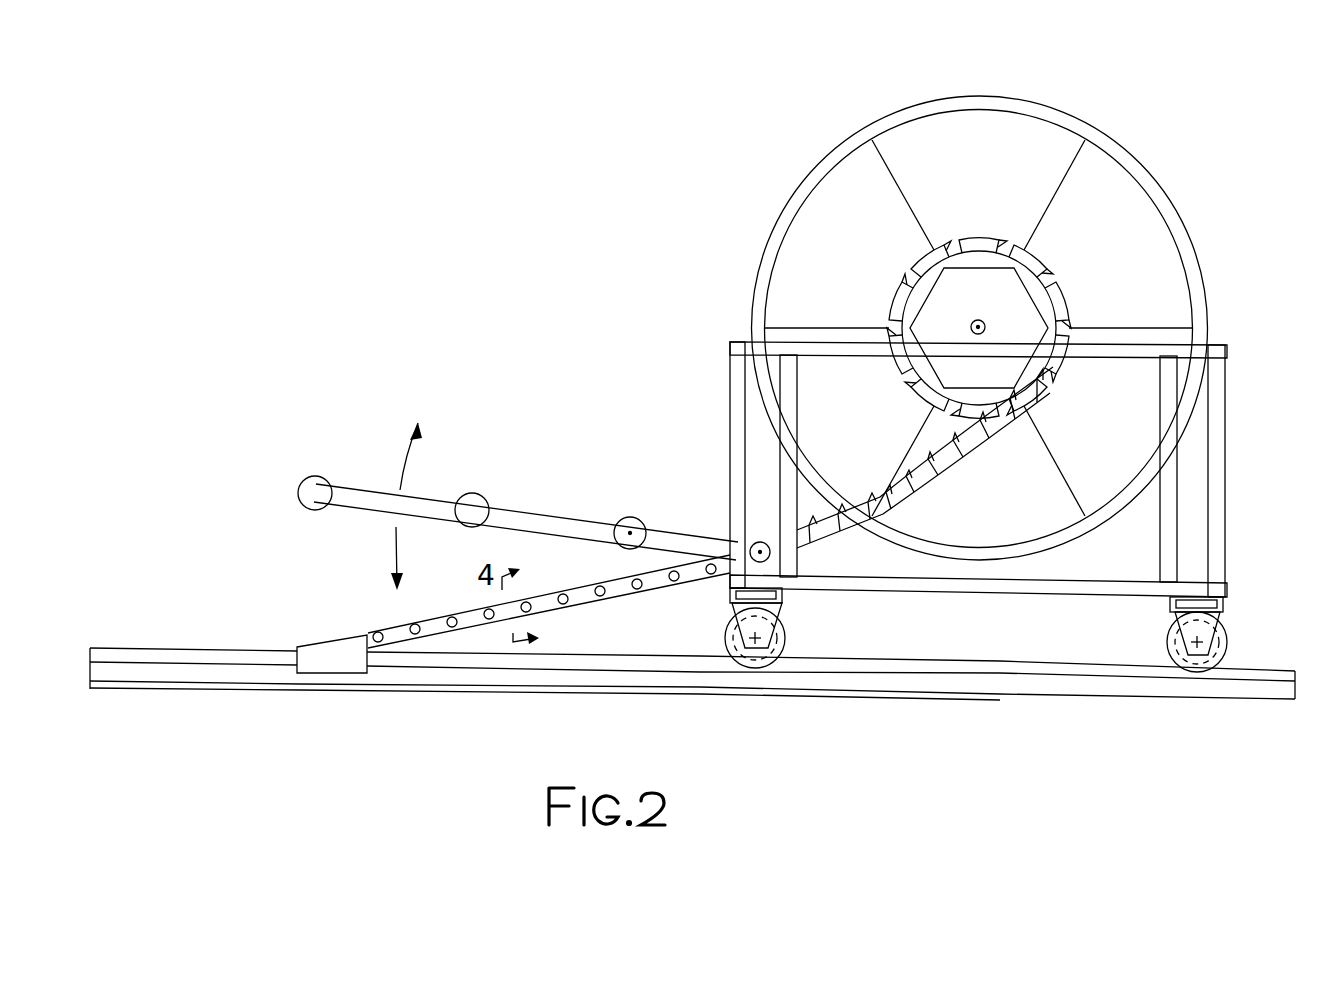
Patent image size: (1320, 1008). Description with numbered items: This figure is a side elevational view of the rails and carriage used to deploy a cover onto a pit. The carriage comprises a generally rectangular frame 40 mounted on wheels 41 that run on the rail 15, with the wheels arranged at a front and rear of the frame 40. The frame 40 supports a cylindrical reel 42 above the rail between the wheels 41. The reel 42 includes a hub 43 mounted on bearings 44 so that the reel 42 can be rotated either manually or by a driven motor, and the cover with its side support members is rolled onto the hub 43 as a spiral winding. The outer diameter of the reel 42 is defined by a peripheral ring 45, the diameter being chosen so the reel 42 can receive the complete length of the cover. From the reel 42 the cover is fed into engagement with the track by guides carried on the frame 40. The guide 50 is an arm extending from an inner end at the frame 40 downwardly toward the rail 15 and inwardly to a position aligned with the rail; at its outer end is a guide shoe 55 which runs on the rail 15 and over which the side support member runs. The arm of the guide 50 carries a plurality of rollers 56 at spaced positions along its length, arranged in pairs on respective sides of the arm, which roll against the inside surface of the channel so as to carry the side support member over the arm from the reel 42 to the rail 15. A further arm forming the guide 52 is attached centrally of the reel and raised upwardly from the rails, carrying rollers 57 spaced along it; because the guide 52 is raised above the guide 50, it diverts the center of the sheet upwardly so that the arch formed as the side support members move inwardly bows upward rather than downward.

The rail 15 is at (1283, 675).
The frame 40 is at (1218, 487).
The wheels 41 is at (1225, 638).
The reel 42 is at (1052, 106).
The hub 43 is at (985, 275).
The bearings 44 is at (1005, 318).
The peripheral ring 45 is at (783, 210).
The guide 50 is at (577, 597).
The guide 52 is at (510, 515).
The guide shoe 55 is at (323, 648).
The rollers 56 is at (598, 593).
The rollers 57 is at (318, 480).